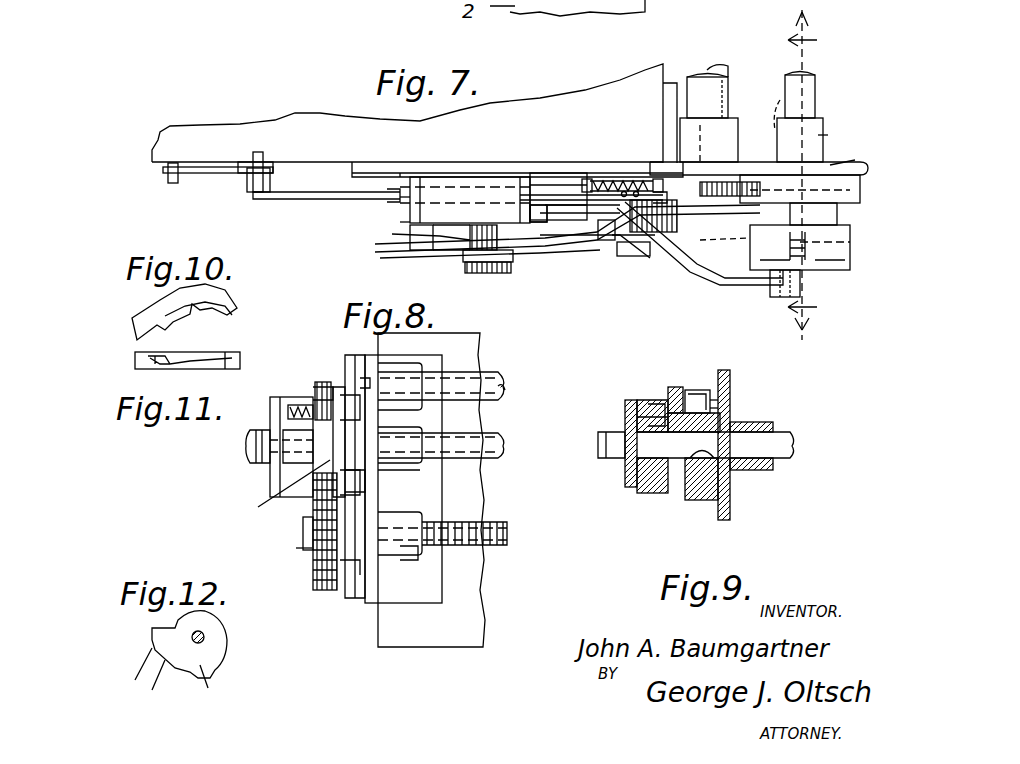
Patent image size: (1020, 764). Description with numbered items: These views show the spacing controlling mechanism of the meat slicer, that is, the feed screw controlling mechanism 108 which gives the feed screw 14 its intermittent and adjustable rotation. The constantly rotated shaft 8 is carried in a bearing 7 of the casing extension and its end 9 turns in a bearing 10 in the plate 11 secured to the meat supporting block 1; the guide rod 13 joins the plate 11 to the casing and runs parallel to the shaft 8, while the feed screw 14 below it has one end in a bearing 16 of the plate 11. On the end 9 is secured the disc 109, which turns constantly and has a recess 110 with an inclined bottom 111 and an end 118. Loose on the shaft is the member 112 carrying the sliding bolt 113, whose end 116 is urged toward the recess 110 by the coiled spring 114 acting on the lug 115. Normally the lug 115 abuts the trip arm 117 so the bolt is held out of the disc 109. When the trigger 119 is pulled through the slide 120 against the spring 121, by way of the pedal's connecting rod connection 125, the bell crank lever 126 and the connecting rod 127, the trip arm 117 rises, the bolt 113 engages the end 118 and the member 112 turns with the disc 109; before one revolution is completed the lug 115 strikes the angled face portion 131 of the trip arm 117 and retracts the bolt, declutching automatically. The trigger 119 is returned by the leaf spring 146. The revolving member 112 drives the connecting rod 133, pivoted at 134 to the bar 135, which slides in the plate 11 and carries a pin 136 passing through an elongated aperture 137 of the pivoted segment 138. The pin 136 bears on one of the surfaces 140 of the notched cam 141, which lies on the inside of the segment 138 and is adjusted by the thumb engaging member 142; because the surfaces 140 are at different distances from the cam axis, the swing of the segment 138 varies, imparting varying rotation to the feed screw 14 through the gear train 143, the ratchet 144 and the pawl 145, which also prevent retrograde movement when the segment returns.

In FIG. 8, the meat supporting block 1 is at (478, 576).
In FIG. 7, the bearing 7 is at (812, 84).
In FIG. 7, the constantly rotated shaft 8 is at (810, 171).
In FIG. 8, the constantly rotated shaft 8 is at (500, 448).
In FIG. 9, the constantly rotated shaft 8 is at (790, 449).
In FIG. 7, the end of shaft 9 is at (818, 98).
In FIG. 8, the end of shaft 9 is at (495, 430).
In FIG. 9, the end of shaft 9 is at (795, 434).
In FIG. 7, the bearing 10 is at (768, 106).
In FIG. 8, the bearing 10 is at (400, 470).
In FIG. 9, the bearing 10 is at (765, 470).
In FIG. 8, the plate 11 is at (375, 590).
In FIG. 9, the plate 11 is at (730, 512).
In FIG. 7, the guide rod 13 is at (695, 77).
In FIG. 8, the guide rod 13 is at (498, 383).
In FIG. 7, the feed screw 14 is at (722, 68).
In FIG. 8, the feed screw 14 is at (508, 534).
In FIG. 8, the bearing 16 is at (408, 556).
In FIG. 8, the feed screw controlling mechanism 108 is at (273, 493).
In FIG. 7, the disc 109 is at (845, 194).
In FIG. 8, the disc 109 is at (360, 478).
In FIG. 9, the disc 109 is at (735, 423).
In FIG. 9, the recess 110 is at (730, 405).
In FIG. 7, the inclined bottom 111 is at (825, 185).
In FIG. 7, the member 112 is at (850, 264).
In FIG. 8, the member 112 is at (270, 472).
In FIG. 9, the member 112 is at (660, 500).
In FIG. 7, the sliding bolt 113 is at (838, 218).
In FIG. 8, the sliding bolt 113 is at (265, 428).
In FIG. 9, the sliding bolt 113 is at (625, 420).
In FIG. 7, the coiled spring 114 is at (852, 245).
In FIG. 8, the coiled spring 114 is at (291, 403).
In FIG. 9, the coiled spring 114 is at (645, 398).
In FIG. 8, the lug 115 is at (322, 385).
In FIG. 9, the lug 115 is at (662, 398).
In FIG. 7, the end of sliding bolt 116 is at (818, 140).
In FIG. 9, the end of sliding bolt 116 is at (690, 408).
In FIG. 7, the trip arm 117 is at (710, 237).
In FIG. 10, the trip arm 117 is at (200, 305).
In FIG. 11, the trip arm 117 is at (208, 370).
In FIG. 8, the trip arm 117 is at (326, 381).
In FIG. 9, the trip arm 117 is at (690, 386).
In FIG. 9, the end of recess 118 is at (722, 395).
In FIG. 7, the trigger 119 is at (722, 182).
In FIG. 7, the slide 120 is at (395, 205).
In FIG. 7, the spring 121 is at (615, 181).
In FIG. 8, the spring 121 is at (364, 378).
In FIG. 7, the connecting rod connection 125 is at (157, 185).
In FIG. 7, the bell crank lever 126 is at (218, 174).
In FIG. 7, the connecting rod 127 is at (488, 177).
In FIG. 7, the angled face portion 131 is at (725, 240).
In FIG. 10, the angled face portion 131 is at (228, 312).
In FIG. 11, the angled face portion 131 is at (170, 353).
In FIG. 7, the connecting rod 133 is at (680, 262).
In FIG. 7, the pivotal connection 134 is at (550, 205).
In FIG. 7, the bar 135 is at (345, 230).
In FIG. 7, the pin 136 is at (445, 195).
In FIG. 7, the elongated aperture 137 is at (460, 230).
In FIG. 7, the segment 138 is at (575, 252).
In FIG. 12, the surfaces 140 is at (176, 658).
In FIG. 7, the notched cam 141 is at (409, 247).
In FIG. 12, the notched cam 141 is at (221, 669).
In FIG. 7, the thumb engaging member 142 is at (495, 273).
In FIG. 7, the gear train 143 is at (618, 260).
In FIG. 8, the gear train 143 is at (298, 550).
In FIG. 8, the ratchet 144 is at (320, 568).
In FIG. 8, the pawl 145 is at (303, 528).
In FIG. 7, the leaf spring 146 is at (684, 195).